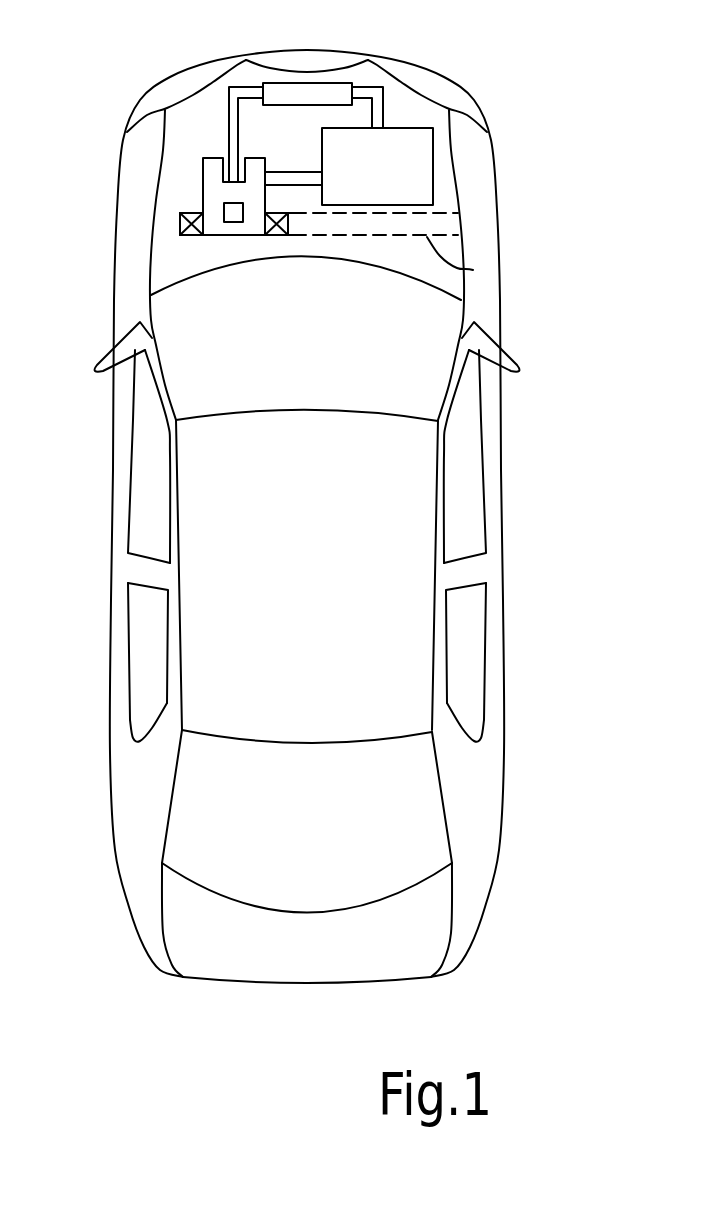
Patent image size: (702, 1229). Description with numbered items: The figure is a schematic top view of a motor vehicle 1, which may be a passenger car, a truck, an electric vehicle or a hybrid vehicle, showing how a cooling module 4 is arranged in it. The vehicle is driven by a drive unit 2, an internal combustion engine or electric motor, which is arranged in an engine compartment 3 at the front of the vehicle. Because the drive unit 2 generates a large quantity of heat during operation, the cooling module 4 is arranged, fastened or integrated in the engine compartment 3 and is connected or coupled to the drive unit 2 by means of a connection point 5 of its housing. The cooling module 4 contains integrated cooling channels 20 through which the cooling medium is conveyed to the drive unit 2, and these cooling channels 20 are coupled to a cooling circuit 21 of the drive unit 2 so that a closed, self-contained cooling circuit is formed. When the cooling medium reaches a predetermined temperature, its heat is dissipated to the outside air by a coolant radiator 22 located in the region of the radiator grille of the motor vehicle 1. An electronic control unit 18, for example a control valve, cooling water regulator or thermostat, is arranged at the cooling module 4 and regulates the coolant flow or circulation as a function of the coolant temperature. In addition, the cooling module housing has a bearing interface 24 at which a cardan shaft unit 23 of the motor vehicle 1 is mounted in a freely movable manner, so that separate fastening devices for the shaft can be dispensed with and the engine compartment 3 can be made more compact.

The motor vehicle 1 is at (485, 907).
The drive unit 2 is at (433, 148).
The engine compartment 3 is at (298, 252).
The cooling module 4 is at (203, 192).
The connection point 5 is at (281, 159).
The electronic control unit 18 is at (233, 222).
The cooling channels 20 is at (207, 152).
The cooling circuit 21 is at (223, 112).
The coolant radiator 22 is at (314, 68).
The cardan shaft unit 23 is at (473, 270).
The bearing interface 24 is at (166, 232).